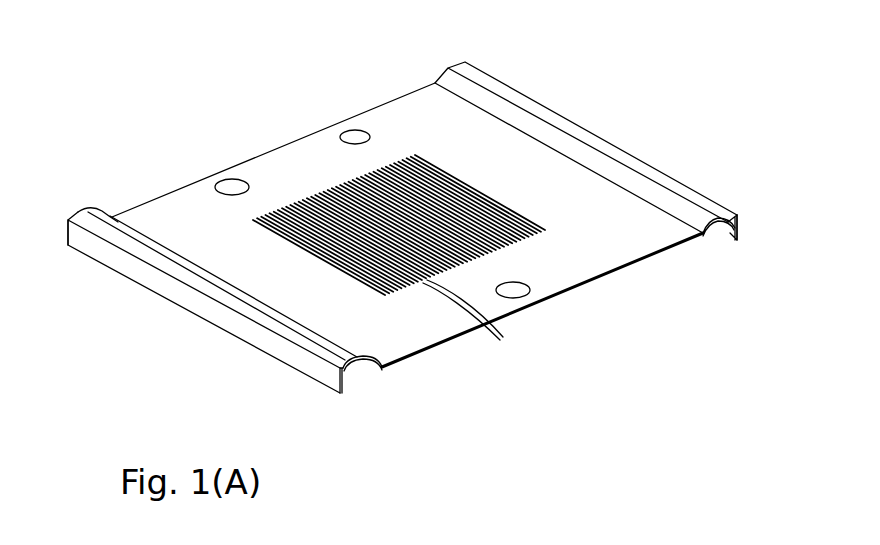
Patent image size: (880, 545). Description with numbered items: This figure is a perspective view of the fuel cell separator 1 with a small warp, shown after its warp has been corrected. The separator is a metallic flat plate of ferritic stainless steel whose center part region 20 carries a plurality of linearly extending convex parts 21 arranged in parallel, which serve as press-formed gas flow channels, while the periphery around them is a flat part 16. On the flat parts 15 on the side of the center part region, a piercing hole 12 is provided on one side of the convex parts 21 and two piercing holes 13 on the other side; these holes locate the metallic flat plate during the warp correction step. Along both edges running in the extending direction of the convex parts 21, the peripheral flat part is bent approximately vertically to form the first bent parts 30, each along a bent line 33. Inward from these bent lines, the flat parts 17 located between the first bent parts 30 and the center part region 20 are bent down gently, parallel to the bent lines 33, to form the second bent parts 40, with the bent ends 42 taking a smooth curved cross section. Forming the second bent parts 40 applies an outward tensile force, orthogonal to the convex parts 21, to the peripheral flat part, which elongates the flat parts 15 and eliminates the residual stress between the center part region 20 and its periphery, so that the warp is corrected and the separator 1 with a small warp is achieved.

The fuel cell separator 1 is at (614, 89).
The piercing hole 12 is at (516, 293).
The piercing hole 13 is at (227, 183).
The flat part 15 is at (282, 168).
The flat part 16 is at (257, 282).
The flat part 17 is at (277, 328).
The center part region 20 is at (400, 222).
The convex part 21 is at (468, 323).
The first bent part 30 is at (324, 377).
The bent line 33 is at (103, 242).
The second bent part 40 is at (382, 370).
The bent end 42 is at (127, 214).